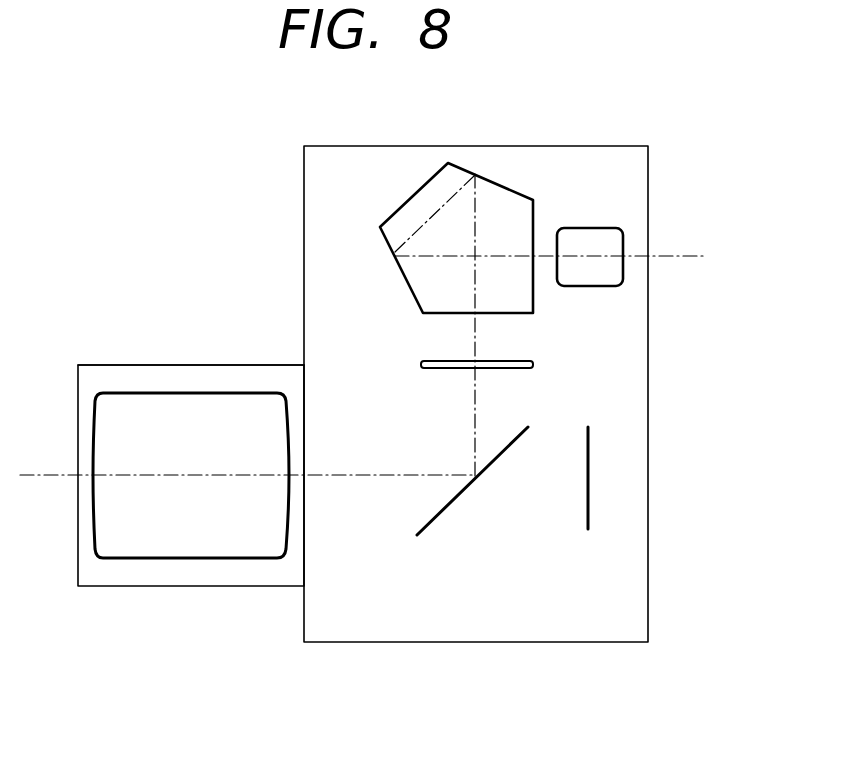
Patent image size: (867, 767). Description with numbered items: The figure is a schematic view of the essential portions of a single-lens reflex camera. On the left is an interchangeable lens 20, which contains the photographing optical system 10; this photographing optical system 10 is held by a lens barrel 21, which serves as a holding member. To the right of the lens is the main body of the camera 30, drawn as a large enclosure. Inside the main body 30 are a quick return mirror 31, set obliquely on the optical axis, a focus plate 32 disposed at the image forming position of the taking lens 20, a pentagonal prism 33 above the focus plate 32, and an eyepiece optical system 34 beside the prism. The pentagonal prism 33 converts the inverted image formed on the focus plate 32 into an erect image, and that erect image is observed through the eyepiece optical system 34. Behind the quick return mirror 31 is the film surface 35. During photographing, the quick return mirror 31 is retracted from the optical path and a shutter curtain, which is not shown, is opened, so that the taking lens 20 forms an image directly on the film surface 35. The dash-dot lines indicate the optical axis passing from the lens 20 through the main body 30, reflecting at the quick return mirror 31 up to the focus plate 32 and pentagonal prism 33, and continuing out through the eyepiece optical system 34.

The photographing optical system 10 is at (243, 558).
The interchangeable lens 20 is at (177, 610).
The lens barrel 21 is at (220, 363).
The main body of the camera 30 is at (363, 147).
The quick return mirror 31 is at (443, 510).
The focus plate 32 is at (513, 361).
The pentagonal prism 33 is at (497, 183).
The eyepiece optical system 34 is at (598, 228).
The film surface 35 is at (588, 503).